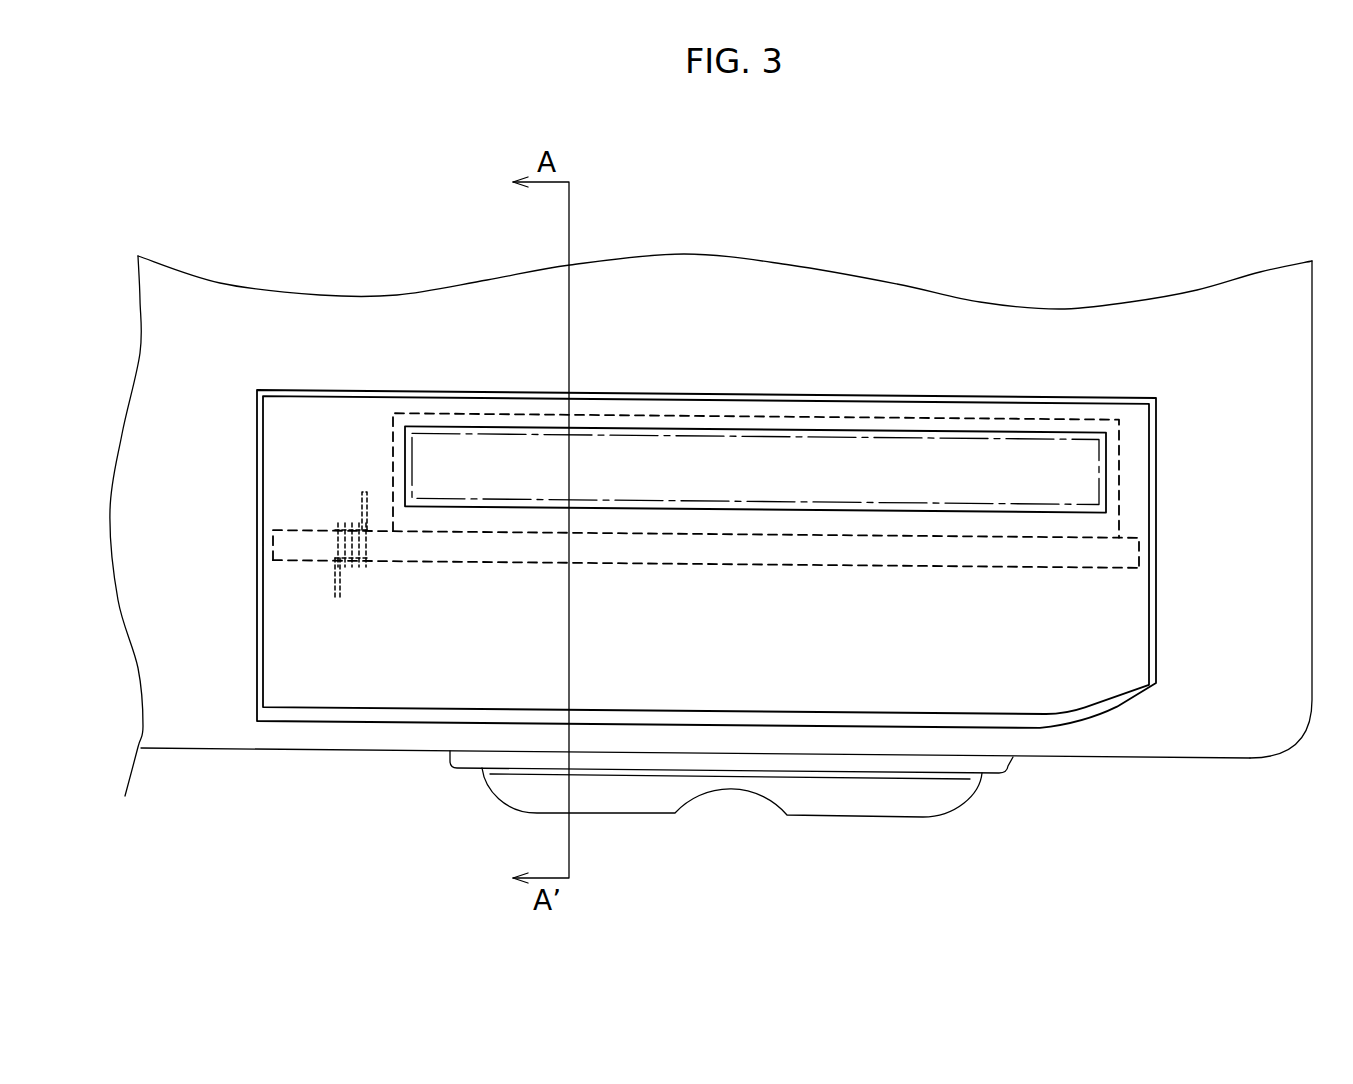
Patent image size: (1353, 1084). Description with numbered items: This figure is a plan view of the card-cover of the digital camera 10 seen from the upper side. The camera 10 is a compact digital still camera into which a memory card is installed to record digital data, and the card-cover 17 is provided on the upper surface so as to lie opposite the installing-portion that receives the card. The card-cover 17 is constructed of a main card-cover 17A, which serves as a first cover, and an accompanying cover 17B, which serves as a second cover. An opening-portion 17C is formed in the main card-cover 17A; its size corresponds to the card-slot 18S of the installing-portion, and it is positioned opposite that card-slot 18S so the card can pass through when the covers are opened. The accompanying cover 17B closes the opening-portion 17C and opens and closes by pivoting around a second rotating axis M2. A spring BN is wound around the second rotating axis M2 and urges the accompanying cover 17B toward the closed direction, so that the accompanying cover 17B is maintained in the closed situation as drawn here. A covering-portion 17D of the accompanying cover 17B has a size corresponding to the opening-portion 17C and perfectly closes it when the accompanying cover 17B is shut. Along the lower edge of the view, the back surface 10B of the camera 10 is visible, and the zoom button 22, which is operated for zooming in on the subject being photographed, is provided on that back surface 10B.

The digital camera 10 is at (1150, 773).
The back surface 10B is at (337, 751).
The card-cover 17 is at (258, 478).
The main card-cover 17A is at (323, 420).
The accompanying cover 17B is at (730, 567).
The opening-portion 17C is at (1106, 473).
The covering-portion 17D is at (1053, 475).
The card-slot 18S is at (935, 436).
The zoom button 22 is at (888, 817).
The second rotating axis M2 is at (290, 560).
The spring BN is at (358, 567).